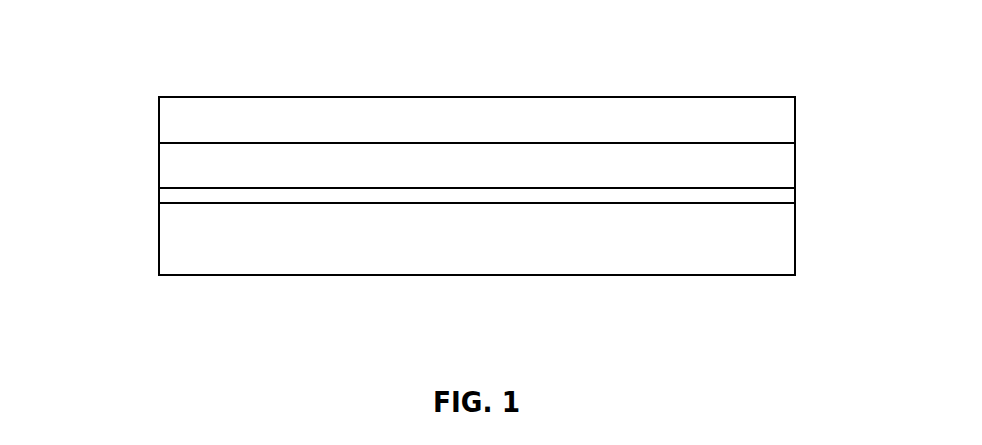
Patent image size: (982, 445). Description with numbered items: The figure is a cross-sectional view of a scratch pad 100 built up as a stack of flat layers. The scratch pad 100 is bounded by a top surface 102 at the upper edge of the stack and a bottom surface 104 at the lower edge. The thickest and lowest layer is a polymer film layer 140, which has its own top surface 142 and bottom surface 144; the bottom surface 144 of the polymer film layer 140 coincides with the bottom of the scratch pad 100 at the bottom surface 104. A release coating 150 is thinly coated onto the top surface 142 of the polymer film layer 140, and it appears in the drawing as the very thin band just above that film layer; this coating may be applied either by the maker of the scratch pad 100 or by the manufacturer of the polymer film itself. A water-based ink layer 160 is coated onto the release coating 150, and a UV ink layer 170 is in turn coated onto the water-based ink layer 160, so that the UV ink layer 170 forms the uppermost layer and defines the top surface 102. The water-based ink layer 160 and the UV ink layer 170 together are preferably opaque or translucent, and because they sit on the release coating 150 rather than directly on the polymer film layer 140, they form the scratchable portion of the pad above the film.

The scratch pad 100 is at (130, 81).
The top surface 102 is at (445, 87).
The bottom surface 104 is at (445, 288).
The polymer film layer 140 is at (752, 240).
The top surface of polymer film layer 142 is at (239, 195).
The bottom surface of polymer film layer 144 is at (184, 287).
The release coating 150 is at (172, 195).
The water-based ink layer 160 is at (782, 167).
The UV ink layer 170 is at (782, 122).